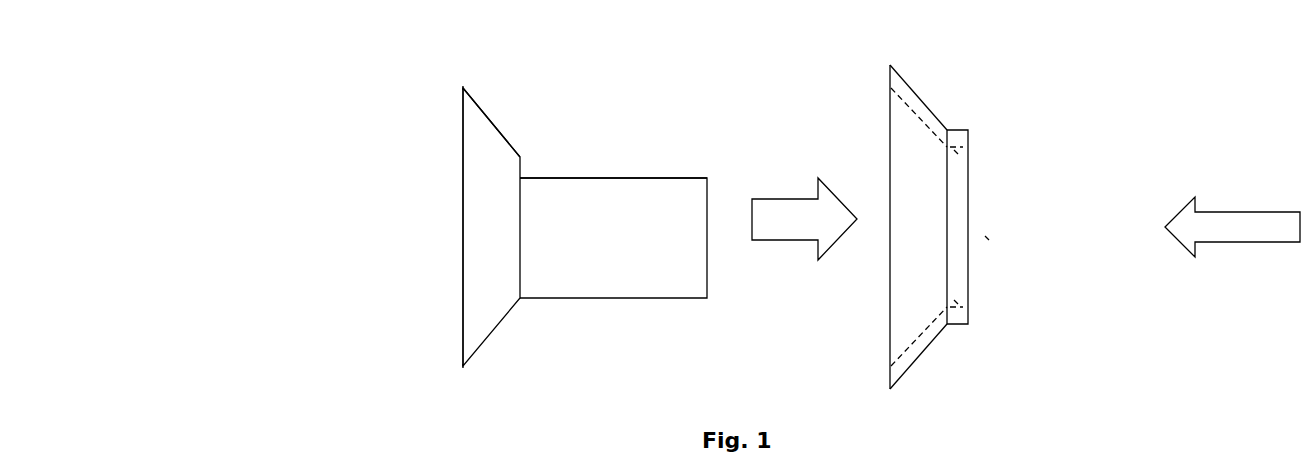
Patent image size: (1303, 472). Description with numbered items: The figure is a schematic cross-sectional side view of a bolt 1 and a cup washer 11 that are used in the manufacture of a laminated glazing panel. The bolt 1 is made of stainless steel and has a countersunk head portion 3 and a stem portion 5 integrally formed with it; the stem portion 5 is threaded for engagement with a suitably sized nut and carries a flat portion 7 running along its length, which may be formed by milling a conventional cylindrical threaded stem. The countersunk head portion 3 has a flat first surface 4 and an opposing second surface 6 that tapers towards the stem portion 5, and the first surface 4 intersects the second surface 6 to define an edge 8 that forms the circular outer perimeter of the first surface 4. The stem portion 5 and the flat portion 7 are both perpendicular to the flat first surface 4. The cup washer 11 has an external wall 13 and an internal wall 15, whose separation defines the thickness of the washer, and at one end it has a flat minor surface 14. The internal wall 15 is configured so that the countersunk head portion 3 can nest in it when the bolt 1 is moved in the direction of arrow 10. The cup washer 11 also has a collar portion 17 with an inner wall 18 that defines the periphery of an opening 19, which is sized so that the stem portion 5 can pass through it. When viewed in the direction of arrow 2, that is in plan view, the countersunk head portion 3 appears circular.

The bolt 1 is at (660, 86).
The arrow 2 is at (1235, 227).
The countersunk head portion 3 is at (490, 306).
The flat first surface 4 is at (463, 286).
The stem portion 5 is at (620, 190).
The second surface 6 is at (484, 147).
The flat portion 7 is at (641, 174).
The edge 8 is at (461, 84).
The arrow 10 is at (795, 215).
The cup washer 11 is at (1057, 164).
The external wall 13 is at (908, 85).
The minor surface 14 is at (888, 82).
The internal wall 15 is at (901, 104).
The collar portion 17 is at (962, 263).
The inner wall 18 is at (957, 153).
The opening 19 is at (989, 238).